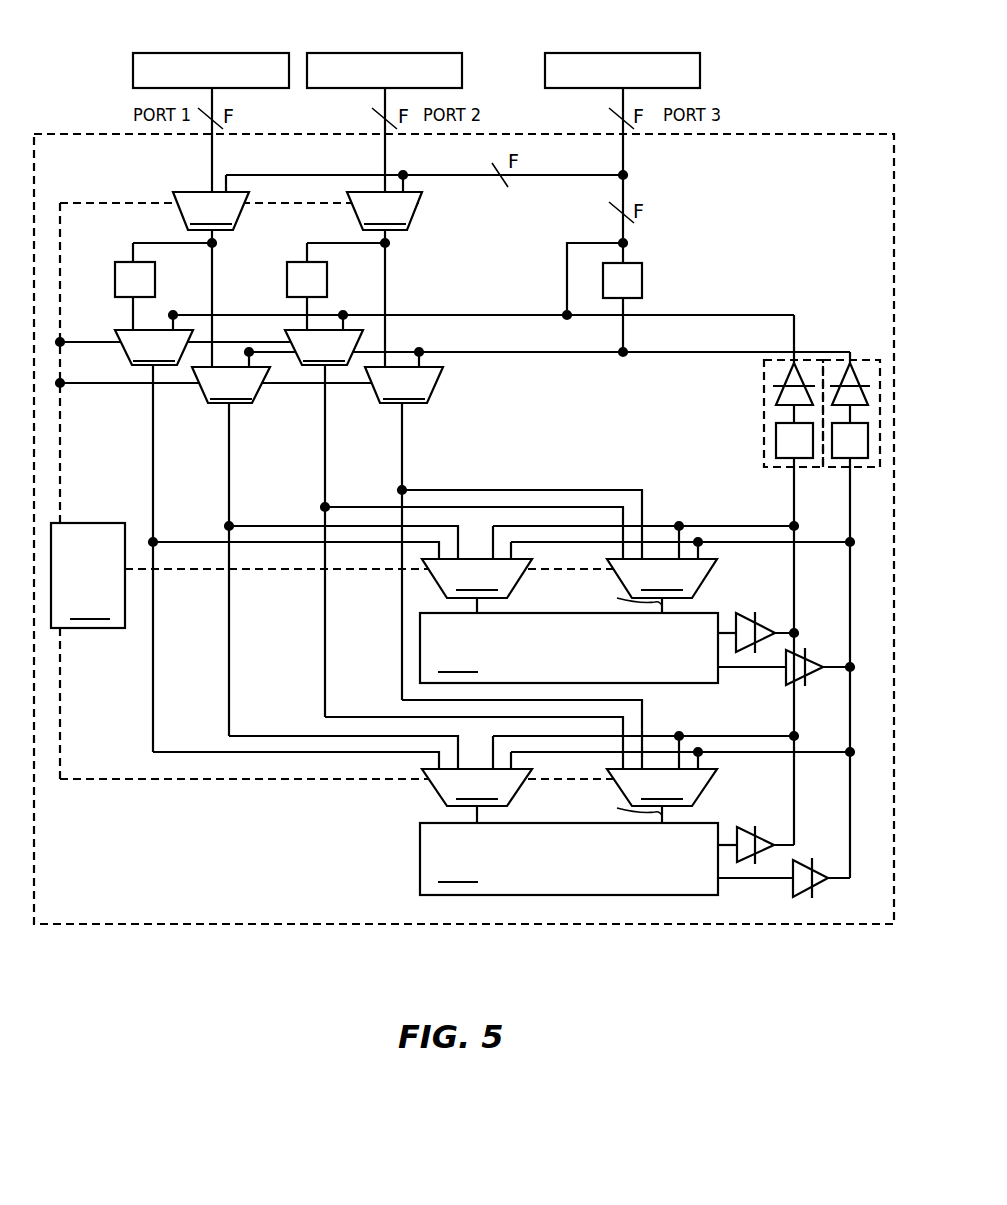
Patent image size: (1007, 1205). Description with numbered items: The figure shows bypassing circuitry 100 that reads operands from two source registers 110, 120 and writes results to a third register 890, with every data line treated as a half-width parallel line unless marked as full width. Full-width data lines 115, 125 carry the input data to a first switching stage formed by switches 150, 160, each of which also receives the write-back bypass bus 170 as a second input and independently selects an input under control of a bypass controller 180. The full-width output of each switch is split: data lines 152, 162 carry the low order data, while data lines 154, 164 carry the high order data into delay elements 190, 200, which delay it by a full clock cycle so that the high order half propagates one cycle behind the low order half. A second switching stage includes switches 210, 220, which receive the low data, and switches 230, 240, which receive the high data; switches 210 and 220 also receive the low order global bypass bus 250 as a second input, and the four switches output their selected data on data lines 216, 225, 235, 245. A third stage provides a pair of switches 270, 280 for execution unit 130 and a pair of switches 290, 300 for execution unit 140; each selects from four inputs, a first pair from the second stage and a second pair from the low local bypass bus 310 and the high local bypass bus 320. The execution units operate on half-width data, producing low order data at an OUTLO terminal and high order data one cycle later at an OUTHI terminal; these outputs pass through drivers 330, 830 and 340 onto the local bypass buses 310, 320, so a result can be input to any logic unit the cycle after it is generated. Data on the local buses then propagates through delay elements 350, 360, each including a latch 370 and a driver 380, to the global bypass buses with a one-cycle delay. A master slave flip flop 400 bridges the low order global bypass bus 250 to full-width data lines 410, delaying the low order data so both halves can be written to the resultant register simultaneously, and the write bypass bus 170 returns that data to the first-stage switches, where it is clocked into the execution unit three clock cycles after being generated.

The processor / bypass circuit 100 is at (827, 134).
The data register 110 is at (268, 53).
The data register 120 is at (440, 53).
The register (port 3) 890 is at (690, 53).
The full width data line 115 is at (212, 150).
The full width data line 125 is at (385, 150).
The data lines 410 is at (623, 150).
The write-back bypass bus 170 is at (556, 176).
The switch 150 is at (211, 211).
The switch 160 is at (384, 211).
The data line 152 is at (212, 265).
The data line 162 is at (385, 273).
The data line 154 is at (170, 243).
The data line 164 is at (345, 243).
The delay element 190 is at (115, 282).
The delay element 200 is at (287, 276).
The master slave flip flop 400 is at (642, 285).
The switch 280 is at (532, 315).
The low order global bypass bus 250 is at (724, 355).
The switch 230 is at (154, 347).
The switch 240 is at (324, 347).
The switch 210 is at (231, 385).
The switch 220 is at (404, 385).
The data line 235 is at (153, 441).
The multiplexer 210 output line 216 is at (229, 443).
The data line 245 is at (325, 441).
The data line 225 is at (402, 441).
The bypass controller 180 is at (88, 575).
The switch 270 is at (477, 586).
The switch 290 is at (477, 796).
The switch 300 is at (662, 796).
The execution unit 130 is at (569, 634).
The execution unit 140 is at (569, 845).
The driver 340 is at (762, 622).
The tri-state output buffer (OUTLO) 830 is at (786, 678).
The driver 330 is at (793, 884).
The high local bypass bus 320 is at (794, 590).
The low local bypass bus 310 is at (850, 770).
The delay element 360 is at (801, 398).
The delay element 350 is at (873, 360).
The driver 380 is at (862, 376).
The latch 370 is at (860, 460).